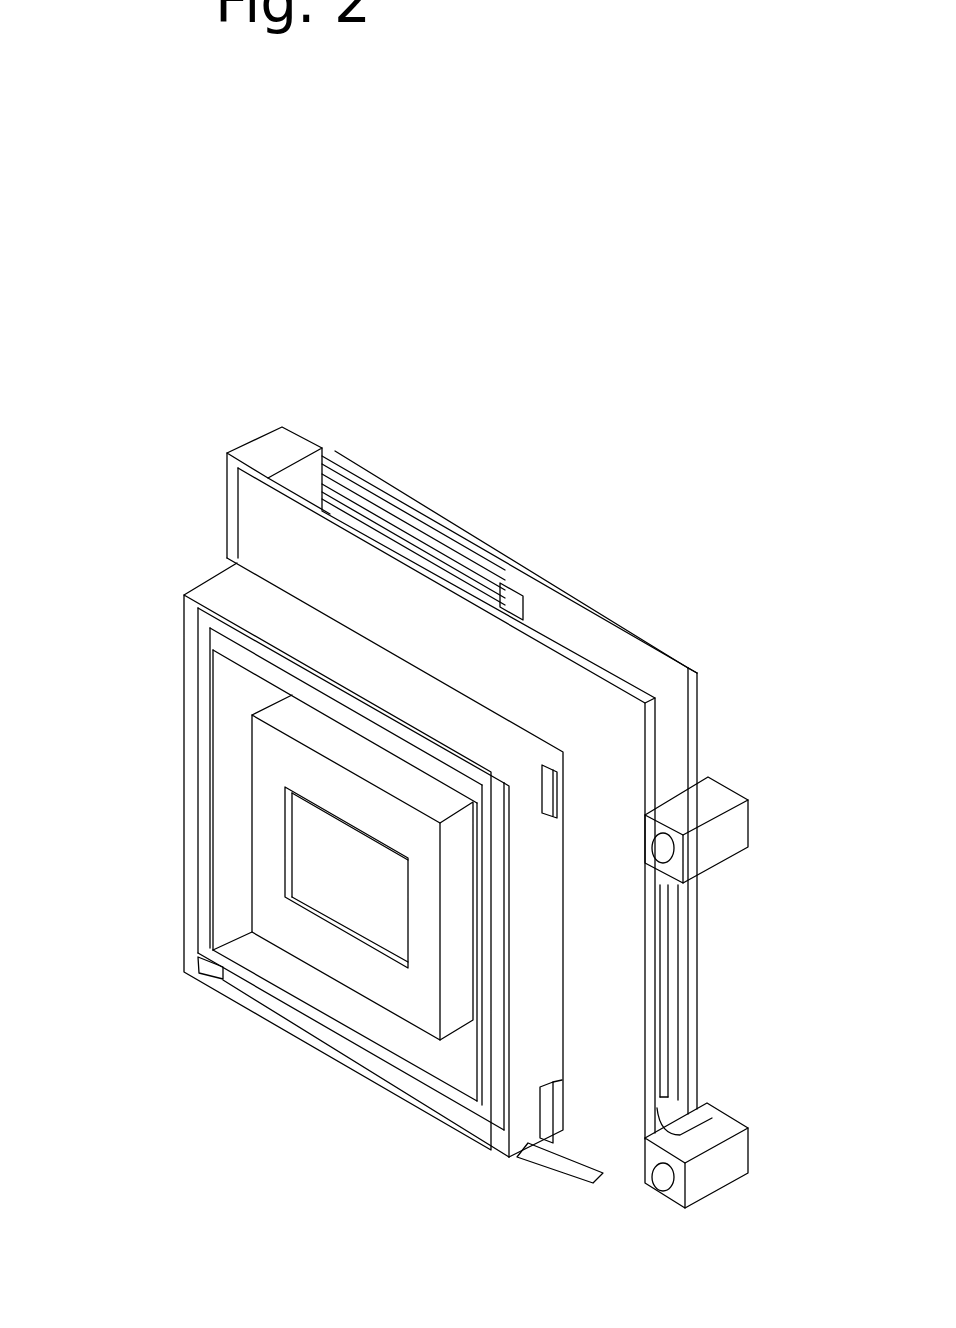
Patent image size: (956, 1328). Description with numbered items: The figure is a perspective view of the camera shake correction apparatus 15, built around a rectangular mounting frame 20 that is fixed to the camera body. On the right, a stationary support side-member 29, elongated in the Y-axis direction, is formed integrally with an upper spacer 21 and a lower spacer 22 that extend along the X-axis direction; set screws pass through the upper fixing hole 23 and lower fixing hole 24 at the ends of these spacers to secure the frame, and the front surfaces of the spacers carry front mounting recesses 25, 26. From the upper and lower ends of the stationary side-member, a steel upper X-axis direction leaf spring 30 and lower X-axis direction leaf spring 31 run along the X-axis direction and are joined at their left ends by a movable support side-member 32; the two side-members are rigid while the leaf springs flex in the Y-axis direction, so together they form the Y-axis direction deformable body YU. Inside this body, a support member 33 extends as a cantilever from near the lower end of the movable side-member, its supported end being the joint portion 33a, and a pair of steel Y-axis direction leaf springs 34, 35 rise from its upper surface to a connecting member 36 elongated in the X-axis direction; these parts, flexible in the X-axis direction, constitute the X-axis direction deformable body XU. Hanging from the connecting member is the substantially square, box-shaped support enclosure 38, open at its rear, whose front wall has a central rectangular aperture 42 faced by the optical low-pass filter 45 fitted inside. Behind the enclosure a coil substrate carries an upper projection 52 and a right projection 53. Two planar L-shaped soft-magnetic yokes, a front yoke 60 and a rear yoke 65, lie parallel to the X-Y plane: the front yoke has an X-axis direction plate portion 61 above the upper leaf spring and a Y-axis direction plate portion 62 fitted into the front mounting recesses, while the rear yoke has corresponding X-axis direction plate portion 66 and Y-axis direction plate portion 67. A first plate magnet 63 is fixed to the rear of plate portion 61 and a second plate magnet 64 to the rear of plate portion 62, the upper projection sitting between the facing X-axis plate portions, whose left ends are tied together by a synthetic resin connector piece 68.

The camera shake correction apparatus 15 is at (147, 580).
The rectangular mounting frame 20 is at (147, 700).
The upper spacer 21 is at (707, 803).
The lower spacer 22 is at (725, 1168).
The upper fixing hole 23 is at (667, 853).
The lower fixing hole 24 is at (657, 1188).
The front mounting recess 25 is at (640, 843).
The front mounting recess 26 is at (615, 1157).
The stationary support side-member 29 is at (535, 908).
The upper X-axis direction leaf spring 30 is at (475, 737).
The lower X-axis direction leaf spring 31 is at (317, 1043).
The movable support side-member 32 is at (186, 805).
The support member 33 is at (272, 992).
The joint portion 33a is at (205, 985).
The Y-axis direction leaf spring 34 is at (475, 1057).
The Y-axis direction leaf spring 35 is at (235, 755).
The connecting member 36 is at (382, 737).
The support enclosure 38 is at (273, 890).
The rectangular aperture 42 is at (323, 812).
The optical low-pass filter 45 is at (332, 868).
The upper projection 52 is at (378, 502).
The right projection 53 is at (682, 1038).
The front yoke 60 is at (582, 725).
The X-axis direction plate portion 61 is at (262, 530).
The Y-axis direction plate portion 62 is at (605, 952).
The first plate magnet 63 is at (318, 492).
The second plate magnet 64 is at (713, 1112).
The rear yoke 65 is at (563, 630).
The X-axis direction plate portion 66 is at (648, 672).
The Y-axis direction plate portion 67 is at (697, 910).
The connector piece 68 is at (275, 455).
The X-axis direction deformable body XU is at (482, 1003).
The Y-axis direction deformable body YU is at (423, 712).